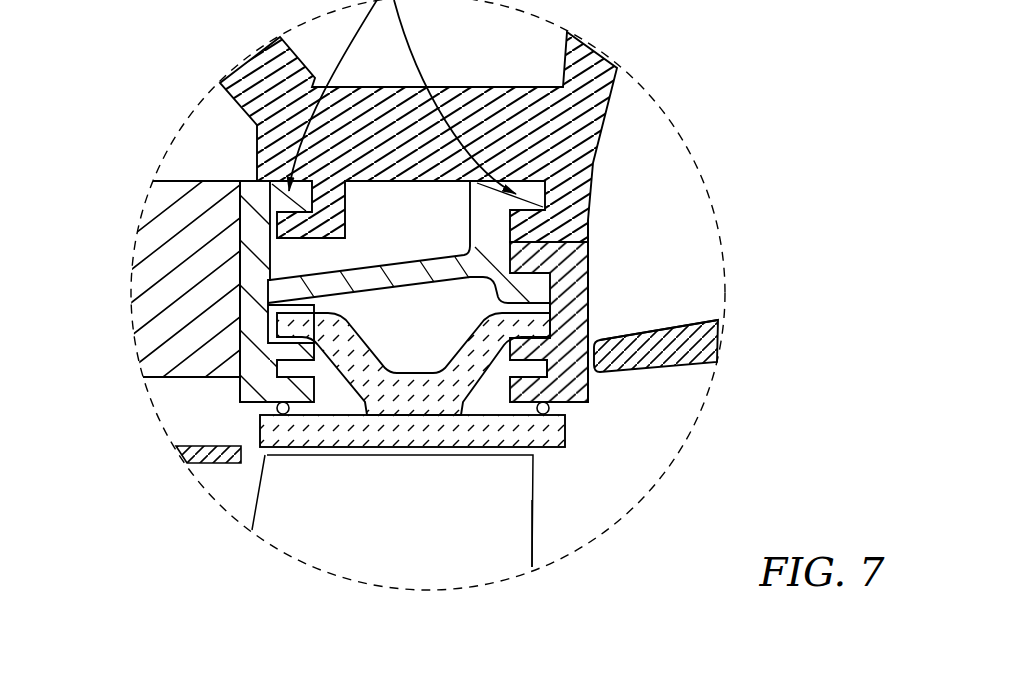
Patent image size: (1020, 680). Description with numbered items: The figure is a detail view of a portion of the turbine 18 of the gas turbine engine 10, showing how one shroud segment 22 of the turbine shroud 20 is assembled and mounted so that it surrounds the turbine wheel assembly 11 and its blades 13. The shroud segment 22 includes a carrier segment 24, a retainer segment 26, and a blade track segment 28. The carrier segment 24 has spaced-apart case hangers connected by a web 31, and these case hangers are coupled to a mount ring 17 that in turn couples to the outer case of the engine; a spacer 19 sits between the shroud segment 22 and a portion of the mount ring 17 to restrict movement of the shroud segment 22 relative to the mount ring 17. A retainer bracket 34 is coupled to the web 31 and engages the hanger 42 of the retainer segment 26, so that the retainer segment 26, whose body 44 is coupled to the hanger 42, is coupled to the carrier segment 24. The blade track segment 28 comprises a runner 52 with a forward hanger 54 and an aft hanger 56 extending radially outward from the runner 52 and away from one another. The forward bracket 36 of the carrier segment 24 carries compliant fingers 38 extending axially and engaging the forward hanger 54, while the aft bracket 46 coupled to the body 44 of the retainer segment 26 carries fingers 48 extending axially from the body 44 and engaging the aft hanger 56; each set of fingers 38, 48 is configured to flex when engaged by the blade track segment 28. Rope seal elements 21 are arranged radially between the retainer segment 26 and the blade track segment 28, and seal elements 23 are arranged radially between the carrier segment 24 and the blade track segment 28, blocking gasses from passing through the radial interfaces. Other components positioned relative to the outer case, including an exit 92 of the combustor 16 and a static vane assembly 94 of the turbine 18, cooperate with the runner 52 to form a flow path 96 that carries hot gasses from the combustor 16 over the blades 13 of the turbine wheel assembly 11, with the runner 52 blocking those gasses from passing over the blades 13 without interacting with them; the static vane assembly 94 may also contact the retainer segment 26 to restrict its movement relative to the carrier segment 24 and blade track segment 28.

The gas turbine engine 10 is at (754, 141).
The turbine wheel assembly 11 is at (479, 527).
The blades 13 is at (503, 567).
The combustor 16 is at (172, 402).
The mount ring 17 is at (609, 102).
The turbine 18 is at (704, 302).
The spacer 19 is at (153, 305).
The turbine shroud 20 is at (205, 248).
The seal element 21 is at (488, 430).
The shroud segment 22 is at (226, 172).
The seal element 23 is at (282, 418).
The carrier segment 24 is at (398, 242).
The retainer segment 26 is at (603, 270).
The blade track segment 28 is at (581, 412).
The web 31 is at (386, 267).
The retainer bracket 34 is at (531, 286).
The forward bracket 36 is at (266, 385).
The fingers 38 is at (294, 342).
The hanger 42 is at (580, 316).
The body 44 is at (577, 298).
The aft bracket 46 is at (576, 336).
The fingers 48 is at (409, 377).
The runner 52 is at (544, 417).
The forward hanger 54 is at (325, 330).
The aft hanger 56 is at (509, 328).
The exit of the combustor 92 is at (191, 440).
The static vane assembly 94 is at (698, 345).
The flow path 96 is at (577, 432).